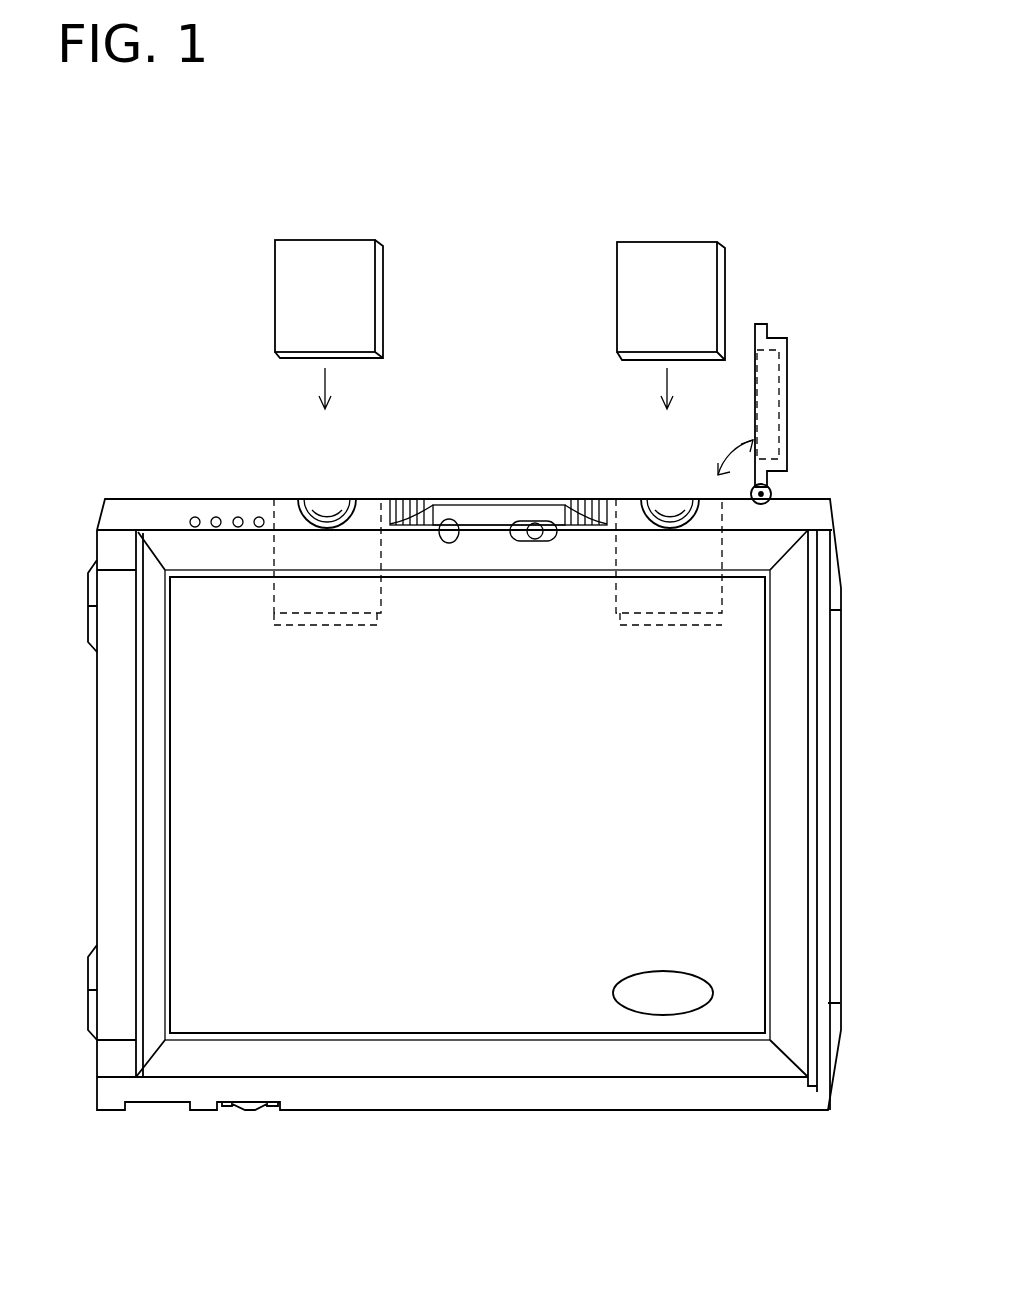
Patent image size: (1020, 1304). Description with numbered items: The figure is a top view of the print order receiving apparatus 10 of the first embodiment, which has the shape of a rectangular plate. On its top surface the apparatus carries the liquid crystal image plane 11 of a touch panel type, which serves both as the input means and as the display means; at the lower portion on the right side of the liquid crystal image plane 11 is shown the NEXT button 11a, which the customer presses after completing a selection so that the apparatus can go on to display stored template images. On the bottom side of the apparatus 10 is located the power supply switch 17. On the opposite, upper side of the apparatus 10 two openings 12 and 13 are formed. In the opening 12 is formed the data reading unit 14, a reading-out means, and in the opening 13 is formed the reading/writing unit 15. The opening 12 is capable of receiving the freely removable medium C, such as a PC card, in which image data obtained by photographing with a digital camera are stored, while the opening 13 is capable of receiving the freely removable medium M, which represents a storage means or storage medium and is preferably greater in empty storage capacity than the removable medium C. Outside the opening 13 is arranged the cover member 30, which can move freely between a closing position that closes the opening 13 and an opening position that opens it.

The print order receiving apparatus 10 is at (825, 498).
The liquid crystal image plane 11 is at (388, 1020).
The NEXT button 11a is at (660, 1015).
The opening 12 is at (278, 510).
The opening 13 is at (610, 510).
The data reading unit 14 is at (381, 622).
The reading/writing unit 15 is at (616, 622).
The power supply switch 17 is at (248, 1113).
The cover member 30 is at (777, 337).
The removable medium C is at (323, 250).
The removable medium M is at (662, 250).